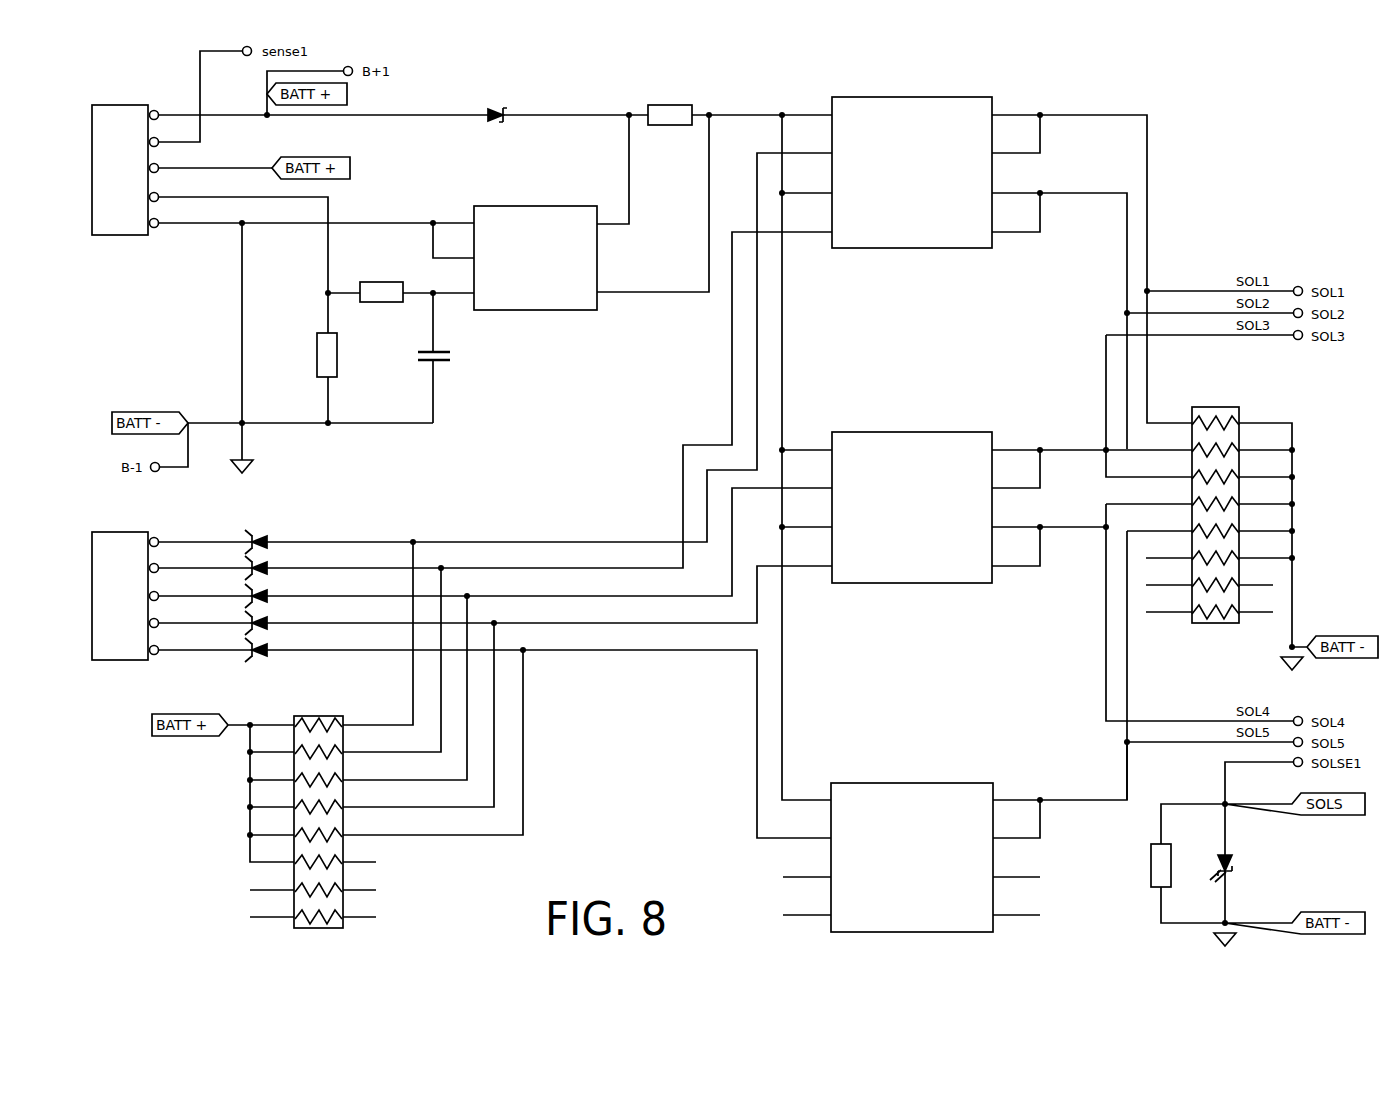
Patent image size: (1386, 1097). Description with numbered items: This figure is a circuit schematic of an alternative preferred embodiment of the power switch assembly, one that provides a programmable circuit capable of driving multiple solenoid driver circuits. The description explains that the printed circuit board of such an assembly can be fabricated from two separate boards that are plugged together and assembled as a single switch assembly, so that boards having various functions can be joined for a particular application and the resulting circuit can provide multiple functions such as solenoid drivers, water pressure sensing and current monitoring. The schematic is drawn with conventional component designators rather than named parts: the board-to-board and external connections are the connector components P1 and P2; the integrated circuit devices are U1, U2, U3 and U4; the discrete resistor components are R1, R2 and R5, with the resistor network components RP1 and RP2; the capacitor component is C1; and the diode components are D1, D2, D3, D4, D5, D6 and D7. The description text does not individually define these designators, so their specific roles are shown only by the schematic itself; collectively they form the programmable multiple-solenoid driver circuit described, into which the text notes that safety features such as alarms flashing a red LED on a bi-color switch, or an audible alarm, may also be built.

The connector CONN_5 P1 is at (158, 167).
The connector CONN_5 P2 is at (132, 593).
The TS1102 current sense amplifier U1 is at (536, 259).
The PHPT610030 transistor pair U2 is at (910, 162).
The PHPT610030 transistor pair U3 is at (910, 497).
The PHPT610030 transistor pair U4 is at (910, 847).
The resistor R1 is at (526, 213).
The resistor R2 is at (336, 355).
The resistor R5 is at (1169, 865).
The capacitor C1 is at (437, 360).
The diode D1 is at (240, 540).
The diode D2 is at (240, 566).
The diode D3 is at (240, 594).
The diode D4 is at (240, 621).
The diode D5 is at (240, 648).
The LED D6 is at (1213, 868).
The Schottky diode D7 is at (486, 116).
The resistor pack RP1 10K RP1 is at (313, 822).
The resistor pack RP2 10K RP2 is at (1219, 517).